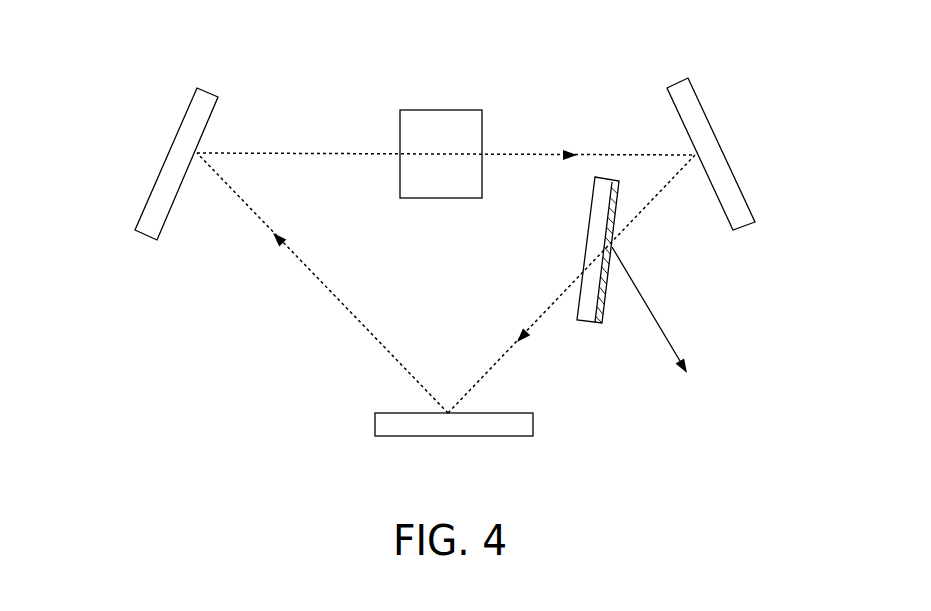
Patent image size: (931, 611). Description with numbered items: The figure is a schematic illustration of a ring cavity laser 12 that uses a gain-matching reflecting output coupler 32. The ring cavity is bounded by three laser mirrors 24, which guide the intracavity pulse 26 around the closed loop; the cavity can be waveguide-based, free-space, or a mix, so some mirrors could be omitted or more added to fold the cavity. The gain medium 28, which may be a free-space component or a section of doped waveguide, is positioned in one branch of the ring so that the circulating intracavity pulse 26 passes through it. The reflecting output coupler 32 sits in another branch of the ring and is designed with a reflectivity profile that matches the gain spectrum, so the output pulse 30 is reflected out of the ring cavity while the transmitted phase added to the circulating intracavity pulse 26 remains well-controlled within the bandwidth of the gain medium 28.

The ring cavity laser 12 is at (150, 86).
The laser mirror 24 is at (157, 198).
The intracavity pulse 26 is at (285, 153).
The gain medium 28 is at (436, 128).
The output pulse 30 is at (670, 343).
The reflecting output coupler 32 is at (588, 298).